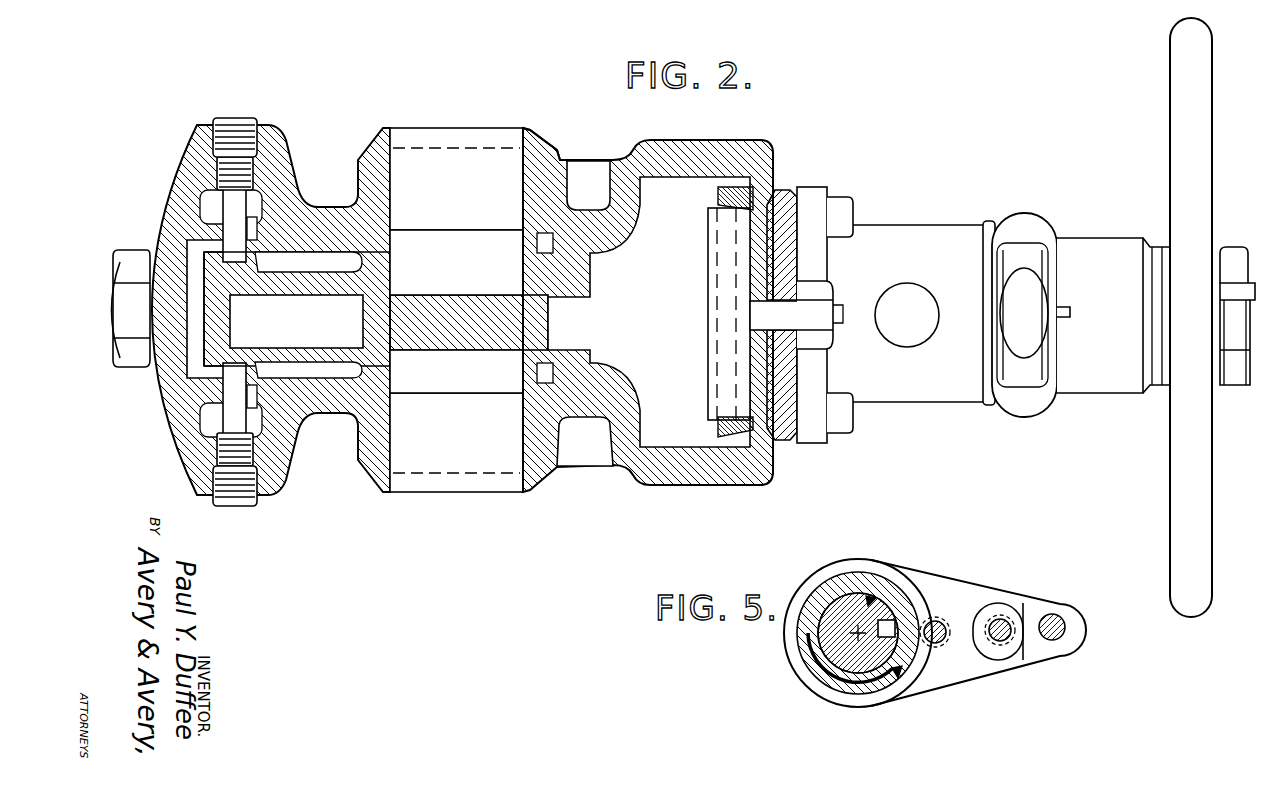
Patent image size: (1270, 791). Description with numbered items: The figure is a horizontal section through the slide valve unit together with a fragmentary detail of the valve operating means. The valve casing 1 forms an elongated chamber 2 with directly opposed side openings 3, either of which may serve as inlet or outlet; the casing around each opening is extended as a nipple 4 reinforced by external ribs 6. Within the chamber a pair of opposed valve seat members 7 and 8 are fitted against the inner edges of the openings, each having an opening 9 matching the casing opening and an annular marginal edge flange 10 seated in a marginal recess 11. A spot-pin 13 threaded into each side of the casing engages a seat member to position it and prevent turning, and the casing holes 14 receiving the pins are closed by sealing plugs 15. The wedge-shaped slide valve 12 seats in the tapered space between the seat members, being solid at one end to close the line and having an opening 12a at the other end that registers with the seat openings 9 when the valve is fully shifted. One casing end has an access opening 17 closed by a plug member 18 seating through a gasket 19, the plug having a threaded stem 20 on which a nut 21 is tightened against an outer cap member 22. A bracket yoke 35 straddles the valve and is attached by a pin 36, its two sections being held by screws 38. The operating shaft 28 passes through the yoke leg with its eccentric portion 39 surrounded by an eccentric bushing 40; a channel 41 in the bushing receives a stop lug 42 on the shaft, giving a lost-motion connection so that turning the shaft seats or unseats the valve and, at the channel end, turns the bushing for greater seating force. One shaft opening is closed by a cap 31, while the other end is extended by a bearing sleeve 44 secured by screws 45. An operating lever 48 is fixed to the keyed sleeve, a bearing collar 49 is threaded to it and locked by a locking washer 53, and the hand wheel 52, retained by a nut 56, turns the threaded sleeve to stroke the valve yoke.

In FIG. 2, the valve casing 1 is at (652, 142).
In FIG. 2, the chamber 2 is at (615, 282).
In FIG. 2, the side openings 3 is at (456, 310).
In FIG. 2, the nipple 4 is at (542, 152).
In FIG. 2, the external ribs 6 is at (333, 172).
In FIG. 2, the valve seat member 7 is at (288, 370).
In FIG. 2, the valve seat member 8 is at (287, 268).
In FIG. 2, the seat member opening 9 is at (456, 311).
In FIG. 2, the annular marginal edge flange 10 is at (532, 234).
In FIG. 2, the marginal recess 11 is at (560, 195).
In FIG. 2, the slide valve 12 is at (497, 278).
In FIG. 2, the valve opening 12a is at (296, 321).
In FIG. 2, the spot-pin 13 is at (233, 212).
In FIG. 2, the casing holes 14 is at (225, 173).
In FIG. 2, the sealing plugs 15 is at (232, 135).
In FIG. 2, the end opening 17 is at (722, 190).
In FIG. 2, the plug member 18 is at (722, 282).
In FIG. 2, the gasket 19 is at (725, 422).
In FIG. 2, the threaded stem 20 is at (783, 300).
In FIG. 2, the nut 21 is at (820, 294).
In FIG. 2, the outer cap member 22 is at (795, 380).
In FIG. 2, the shaft 28 is at (1245, 320).
In FIG. 2, the cap 31 is at (130, 258).
In FIG. 5, the bracket yoke 35 is at (950, 582).
In FIG. 5, the pin 36 is at (1056, 616).
In FIG. 5, the screws 38 is at (942, 626).
In FIG. 5, the eccentric portion 39 is at (838, 598).
In FIG. 5, the eccentric bushing 40 is at (870, 575).
In FIG. 5, the channel 41 is at (825, 665).
In FIG. 5, the stop lug 42 is at (895, 624).
In FIG. 2, the bearing sleeve 44 is at (962, 232).
In FIG. 2, the screws 45 is at (838, 212).
In FIG. 2, the operating lever 48 is at (1030, 296).
In FIG. 2, the bearing collar 49 is at (1105, 242).
In FIG. 2, the hand wheel 52 is at (1182, 136).
In FIG. 2, the locking washer 53 is at (1060, 318).
In FIG. 2, the nut 56 is at (1232, 258).